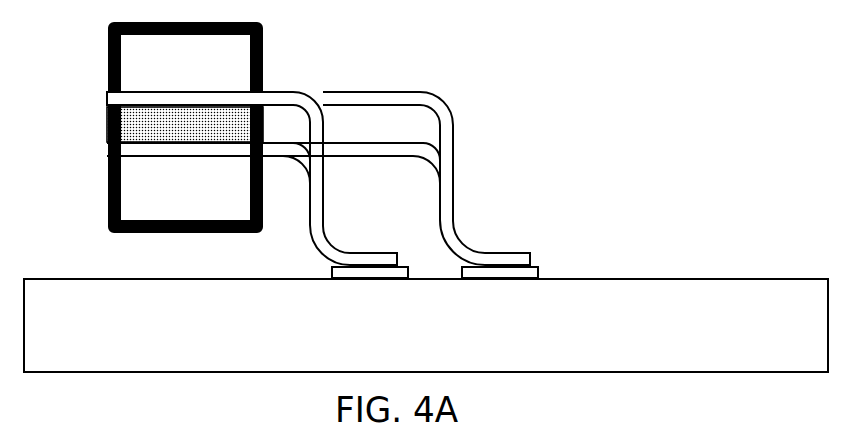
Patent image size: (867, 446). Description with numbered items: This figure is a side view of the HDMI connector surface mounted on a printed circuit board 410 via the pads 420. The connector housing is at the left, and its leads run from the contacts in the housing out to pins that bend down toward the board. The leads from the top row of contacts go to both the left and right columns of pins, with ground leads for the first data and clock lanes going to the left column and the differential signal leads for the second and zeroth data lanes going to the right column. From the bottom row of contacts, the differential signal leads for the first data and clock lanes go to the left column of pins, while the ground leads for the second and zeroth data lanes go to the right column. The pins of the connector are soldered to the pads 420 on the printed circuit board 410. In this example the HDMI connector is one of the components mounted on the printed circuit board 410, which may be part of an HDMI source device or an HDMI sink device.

The printed circuit board 410 is at (475, 336).
The pads 420 is at (323, 272).